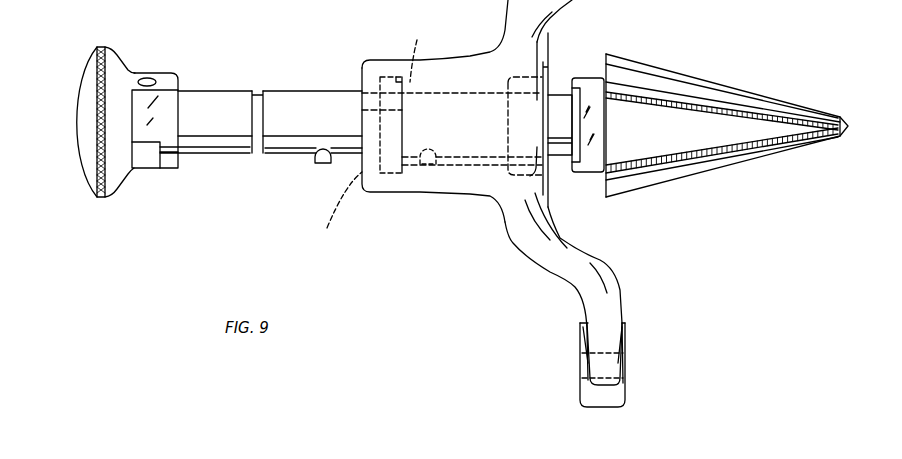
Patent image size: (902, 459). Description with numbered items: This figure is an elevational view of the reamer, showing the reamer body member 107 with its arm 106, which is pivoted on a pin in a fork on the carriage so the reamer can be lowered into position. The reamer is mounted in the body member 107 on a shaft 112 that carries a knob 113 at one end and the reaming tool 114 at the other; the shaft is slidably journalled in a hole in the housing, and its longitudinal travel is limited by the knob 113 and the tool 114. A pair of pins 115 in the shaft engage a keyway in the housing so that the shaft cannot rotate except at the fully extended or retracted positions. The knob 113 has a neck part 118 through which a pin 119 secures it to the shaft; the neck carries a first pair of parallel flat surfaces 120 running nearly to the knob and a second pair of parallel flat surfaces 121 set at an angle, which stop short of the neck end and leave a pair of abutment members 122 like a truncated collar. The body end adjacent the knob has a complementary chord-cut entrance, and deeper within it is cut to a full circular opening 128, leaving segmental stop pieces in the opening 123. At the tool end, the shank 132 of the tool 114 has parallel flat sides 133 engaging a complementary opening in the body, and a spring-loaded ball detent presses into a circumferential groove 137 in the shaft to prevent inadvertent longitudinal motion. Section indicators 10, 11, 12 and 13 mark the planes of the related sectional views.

The arm 106 is at (607, 292).
The reamer body member 107 is at (444, 188).
The shaft 112 is at (292, 107).
The knob 113 is at (90, 173).
The reaming tool 114 is at (665, 75).
The pins 115 is at (323, 164).
The neck part 118 is at (134, 80).
The pin 119 is at (141, 78).
The parallel flat surfaces 120 is at (165, 103).
The second pair of parallel flat surfaces 121 is at (152, 162).
The abutment members 122 is at (172, 158).
The opening 123 is at (332, 211).
The circular opening 128 is at (428, 53).
The shank 132 is at (590, 78).
The parallel flat sides 133 is at (586, 152).
The circumferential groove 137 is at (257, 157).
The section line 10- 10 is at (147, 200).
The section line 11- 11 is at (380, 217).
The section line 12- 12 is at (559, 207).
The section line 13- 13 is at (38, 120).